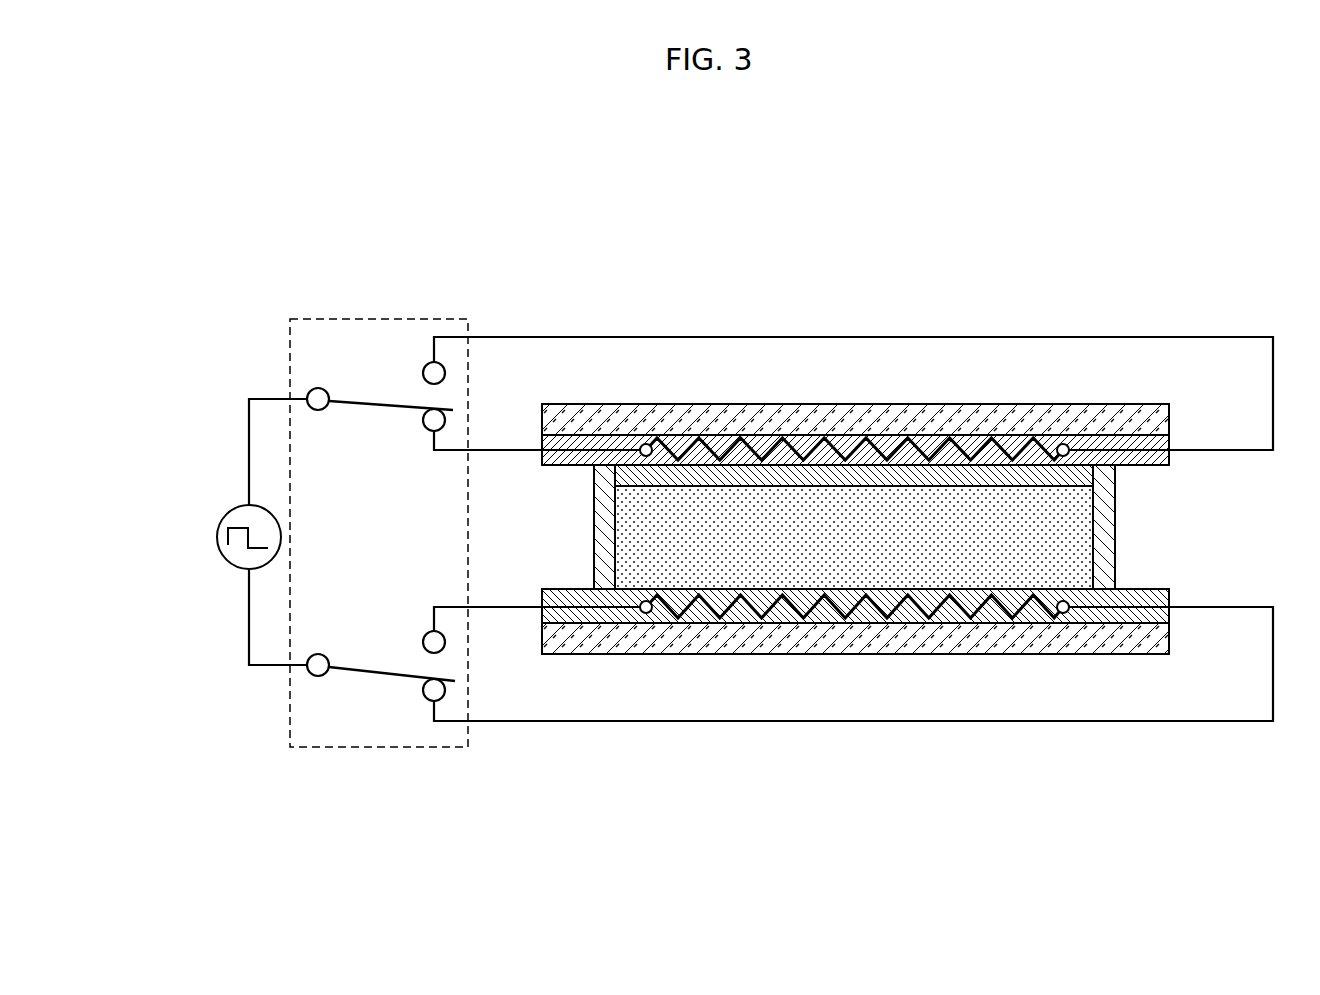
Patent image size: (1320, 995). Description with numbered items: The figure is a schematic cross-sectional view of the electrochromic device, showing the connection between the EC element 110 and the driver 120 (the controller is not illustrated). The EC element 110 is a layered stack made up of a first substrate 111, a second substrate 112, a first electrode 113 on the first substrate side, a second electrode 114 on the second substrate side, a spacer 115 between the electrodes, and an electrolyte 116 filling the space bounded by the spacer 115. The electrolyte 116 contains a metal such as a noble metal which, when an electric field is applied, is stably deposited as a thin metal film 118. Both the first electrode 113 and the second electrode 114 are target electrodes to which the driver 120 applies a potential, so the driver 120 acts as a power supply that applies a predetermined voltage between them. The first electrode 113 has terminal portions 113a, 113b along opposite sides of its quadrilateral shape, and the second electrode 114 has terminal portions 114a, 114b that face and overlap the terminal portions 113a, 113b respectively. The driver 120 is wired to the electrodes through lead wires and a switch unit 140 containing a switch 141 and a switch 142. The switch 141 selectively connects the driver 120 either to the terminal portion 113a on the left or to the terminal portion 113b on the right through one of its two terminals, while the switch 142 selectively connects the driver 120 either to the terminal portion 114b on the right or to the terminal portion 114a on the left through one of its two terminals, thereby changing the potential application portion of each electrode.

The EC element 110 is at (1225, 283).
The first substrate 111 is at (977, 420).
The second substrate 112 is at (1140, 638).
The first electrode 113 is at (887, 440).
The terminal portion 113a is at (553, 458).
The terminal portion 113b is at (1150, 458).
The second electrode 114 is at (868, 603).
The terminal portion 114a is at (567, 598).
The terminal portion 114b is at (1143, 592).
The spacer 115 is at (603, 533).
The electrolyte 116 is at (777, 570).
The thin metal film 118 is at (788, 480).
The driver 120 is at (233, 510).
The switch unit 140 is at (420, 319).
The switch 141 is at (345, 397).
The switch 142 is at (342, 667).